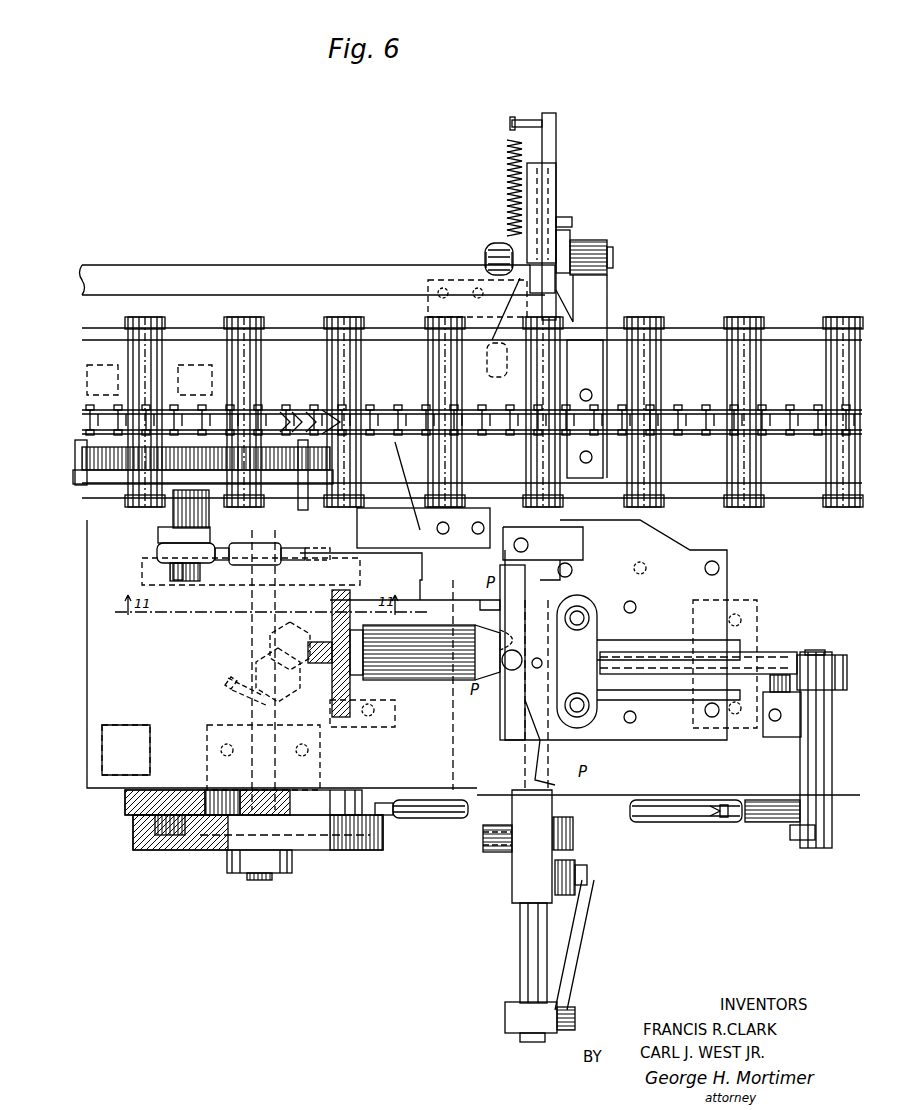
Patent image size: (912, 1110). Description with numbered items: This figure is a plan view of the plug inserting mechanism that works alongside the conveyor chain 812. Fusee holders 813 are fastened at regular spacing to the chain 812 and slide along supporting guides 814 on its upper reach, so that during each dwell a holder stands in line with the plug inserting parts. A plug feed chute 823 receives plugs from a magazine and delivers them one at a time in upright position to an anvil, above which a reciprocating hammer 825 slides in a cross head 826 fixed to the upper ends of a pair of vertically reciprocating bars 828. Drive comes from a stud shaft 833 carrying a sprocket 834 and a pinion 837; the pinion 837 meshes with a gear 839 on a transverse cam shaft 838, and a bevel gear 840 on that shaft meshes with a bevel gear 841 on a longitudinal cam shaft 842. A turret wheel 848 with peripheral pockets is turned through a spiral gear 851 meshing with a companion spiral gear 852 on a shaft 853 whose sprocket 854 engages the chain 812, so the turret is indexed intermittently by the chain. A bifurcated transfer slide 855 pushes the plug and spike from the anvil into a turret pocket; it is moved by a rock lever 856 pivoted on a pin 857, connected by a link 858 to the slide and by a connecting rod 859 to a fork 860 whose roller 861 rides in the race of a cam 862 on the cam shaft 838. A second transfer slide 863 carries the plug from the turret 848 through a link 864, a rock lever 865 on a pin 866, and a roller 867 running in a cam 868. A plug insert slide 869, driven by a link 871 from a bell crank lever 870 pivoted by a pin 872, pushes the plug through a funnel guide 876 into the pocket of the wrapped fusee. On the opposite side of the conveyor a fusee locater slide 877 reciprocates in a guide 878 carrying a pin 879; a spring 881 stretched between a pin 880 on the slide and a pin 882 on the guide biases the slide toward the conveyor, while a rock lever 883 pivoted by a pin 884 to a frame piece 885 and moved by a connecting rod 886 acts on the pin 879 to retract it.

The conveyor chain 812 is at (690, 408).
The fusee holder 813 is at (562, 372).
The supporting guide 814 is at (693, 335).
The plug feed chute 823 is at (555, 786).
The reciprocating hammer 825 is at (543, 663).
The cross head 826 is at (560, 640).
The vertically reciprocating bars 828 is at (579, 612).
The stud shaft 833 is at (143, 363).
The sprocket 834 is at (198, 456).
The pinion 837 is at (78, 458).
The transverse cam shaft 838 is at (260, 880).
The gear 839 is at (300, 500).
The bevel gear 840 is at (226, 680).
The bevel gear 841 is at (262, 628).
The longitudinal cam shaft 842 is at (262, 653).
The turret wheel 848 is at (500, 717).
The spiral gear 851 is at (352, 700).
The spiral gear 852 is at (340, 665).
The shaft 853 is at (405, 514).
The sprocket 854 is at (318, 406).
The transfer slide 855 is at (783, 652).
The rock lever 856 is at (820, 657).
The pin 857 is at (797, 848).
The link 858 is at (795, 690).
The connecting rod 859 is at (413, 812).
The fork 860 is at (125, 806).
The roller 861 is at (152, 850).
The cam 862 is at (330, 850).
The second transfer slide 863 is at (282, 566).
The link 864 is at (250, 553).
The rock lever 865 is at (165, 545).
The pin 866 is at (185, 516).
The roller 867 is at (180, 580).
The cam 868 is at (142, 572).
The plug insert slide 869 is at (528, 936).
The bell crank lever 870 is at (575, 855).
The link 871 is at (578, 950).
The pin 872 is at (483, 840).
The funnel guide 876 is at (570, 547).
The fusee locater slide 877 is at (556, 140).
The guide 878 is at (556, 183).
The pin 879 is at (565, 218).
The pin 880 is at (525, 121).
The spring 881 is at (507, 178).
The pin 882 is at (512, 245).
The rock lever 883 is at (566, 243).
The pin 884 is at (613, 258).
The frame piece 885 is at (600, 295).
The connecting rod 886 is at (490, 248).